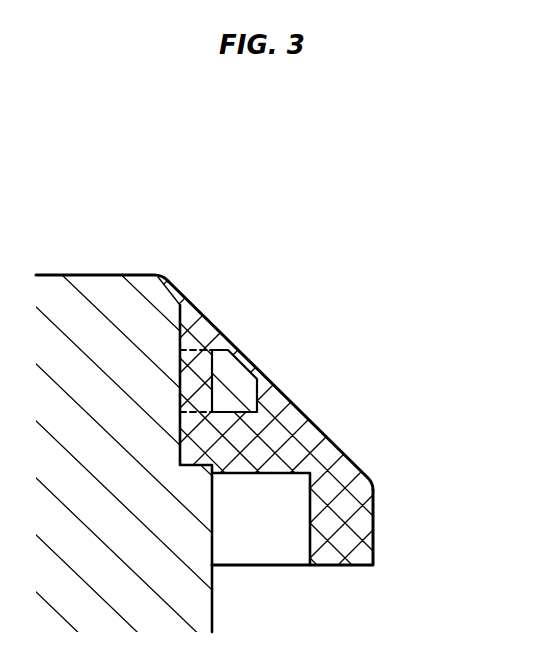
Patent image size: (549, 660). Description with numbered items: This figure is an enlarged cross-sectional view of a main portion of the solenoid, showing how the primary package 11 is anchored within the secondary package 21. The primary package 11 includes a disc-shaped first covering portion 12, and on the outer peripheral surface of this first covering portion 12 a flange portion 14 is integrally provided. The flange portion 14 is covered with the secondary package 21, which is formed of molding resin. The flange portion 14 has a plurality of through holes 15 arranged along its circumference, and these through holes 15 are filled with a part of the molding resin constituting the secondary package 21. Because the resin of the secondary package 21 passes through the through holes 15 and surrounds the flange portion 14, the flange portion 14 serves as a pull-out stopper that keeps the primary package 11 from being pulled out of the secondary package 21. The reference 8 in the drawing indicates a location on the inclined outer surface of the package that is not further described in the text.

The primary package 11 is at (88, 292).
The first covering portion 12 is at (134, 323).
The inclined outer surface 8 is at (230, 343).
The flange portion 14 is at (247, 389).
The through holes 15 is at (212, 352).
The secondary package 21 is at (324, 354).